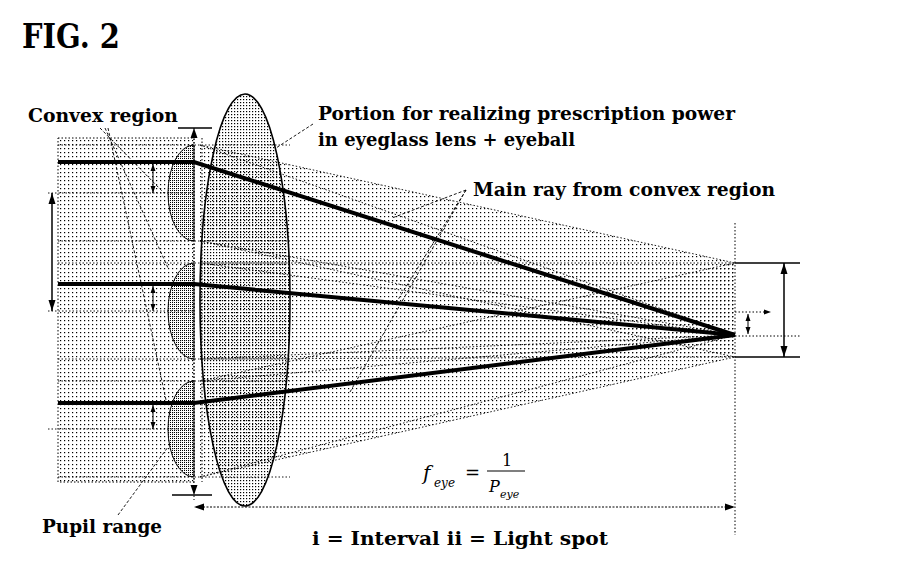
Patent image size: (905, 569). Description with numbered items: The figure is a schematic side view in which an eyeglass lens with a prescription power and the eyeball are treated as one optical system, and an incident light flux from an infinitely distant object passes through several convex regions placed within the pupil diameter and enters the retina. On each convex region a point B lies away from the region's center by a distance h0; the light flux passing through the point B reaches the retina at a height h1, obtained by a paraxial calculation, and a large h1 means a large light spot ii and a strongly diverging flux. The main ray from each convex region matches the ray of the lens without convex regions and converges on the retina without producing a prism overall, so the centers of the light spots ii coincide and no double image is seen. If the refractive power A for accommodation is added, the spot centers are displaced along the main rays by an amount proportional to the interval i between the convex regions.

The point on the convex region B is at (174, 310).
The refractive power for accommodation A is at (767, 314).
The distance from the center of the circular region h0 is at (140, 298).
The height on the image plane h1 is at (760, 327).
The interval i is at (43, 252).
The light spot ii is at (774, 310).